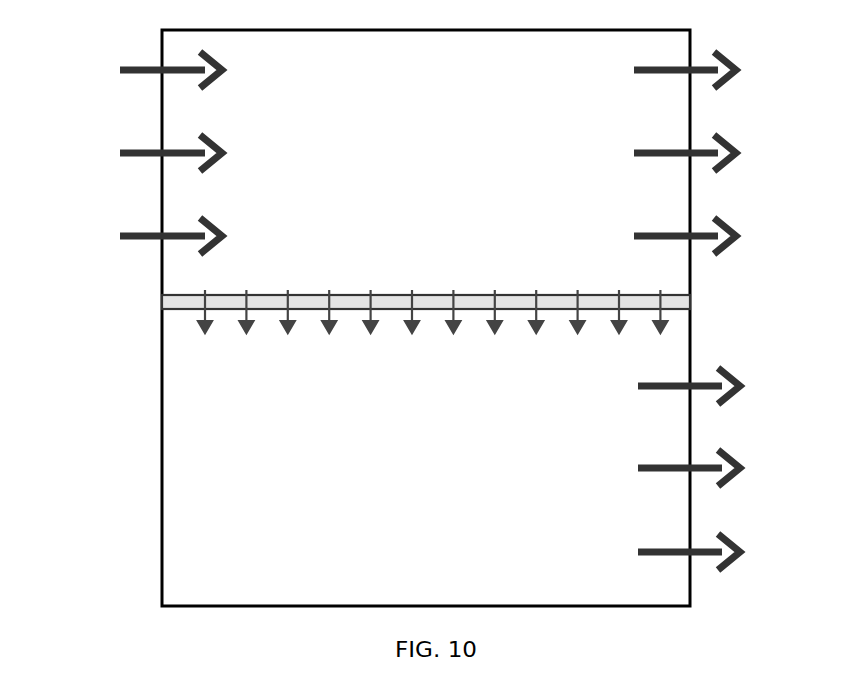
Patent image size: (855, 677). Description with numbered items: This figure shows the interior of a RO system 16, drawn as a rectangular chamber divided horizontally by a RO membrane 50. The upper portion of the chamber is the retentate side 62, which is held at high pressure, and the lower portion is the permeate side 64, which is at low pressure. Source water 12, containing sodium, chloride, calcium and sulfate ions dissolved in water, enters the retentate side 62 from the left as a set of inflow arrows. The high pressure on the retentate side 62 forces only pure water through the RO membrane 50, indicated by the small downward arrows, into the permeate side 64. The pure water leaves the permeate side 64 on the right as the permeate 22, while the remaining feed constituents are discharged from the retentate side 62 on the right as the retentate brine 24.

The source water 12 is at (142, 74).
The RO system 16 is at (96, 84).
The permeate 22 is at (702, 390).
The retentate brine 24 is at (700, 74).
The RO membrane 50 is at (430, 303).
The retentate side 62 is at (449, 170).
The permeate side 64 is at (449, 477).